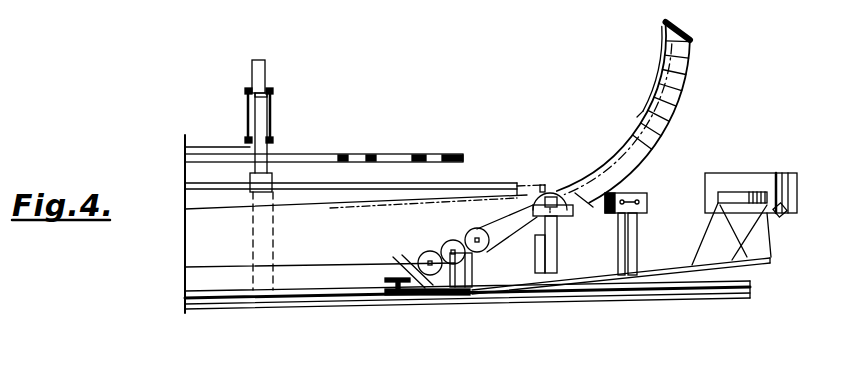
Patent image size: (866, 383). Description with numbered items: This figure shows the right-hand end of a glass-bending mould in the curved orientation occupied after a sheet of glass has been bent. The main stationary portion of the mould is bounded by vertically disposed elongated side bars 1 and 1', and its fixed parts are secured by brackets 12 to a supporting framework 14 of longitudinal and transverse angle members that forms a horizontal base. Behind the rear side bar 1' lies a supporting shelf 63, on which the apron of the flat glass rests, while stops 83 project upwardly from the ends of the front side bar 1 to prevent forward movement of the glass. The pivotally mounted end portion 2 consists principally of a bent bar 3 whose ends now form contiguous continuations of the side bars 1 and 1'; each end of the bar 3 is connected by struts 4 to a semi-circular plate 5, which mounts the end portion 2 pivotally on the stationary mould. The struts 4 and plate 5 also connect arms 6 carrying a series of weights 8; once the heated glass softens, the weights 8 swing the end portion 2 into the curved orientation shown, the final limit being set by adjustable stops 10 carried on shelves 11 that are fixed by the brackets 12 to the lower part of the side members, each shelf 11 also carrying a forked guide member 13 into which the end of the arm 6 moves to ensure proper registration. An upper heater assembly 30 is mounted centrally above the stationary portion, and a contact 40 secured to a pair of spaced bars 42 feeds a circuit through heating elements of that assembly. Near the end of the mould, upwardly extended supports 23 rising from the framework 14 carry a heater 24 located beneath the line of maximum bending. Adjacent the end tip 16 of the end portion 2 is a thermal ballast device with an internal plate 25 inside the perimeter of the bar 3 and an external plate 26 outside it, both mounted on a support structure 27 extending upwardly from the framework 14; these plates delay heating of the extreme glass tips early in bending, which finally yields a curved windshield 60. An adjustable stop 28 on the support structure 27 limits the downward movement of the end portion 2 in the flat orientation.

The side bar 1 is at (320, 234).
The side bar 1' is at (356, 180).
The end portion 2 is at (686, 108).
The bent bar 3 is at (650, 155).
The struts 4 is at (572, 217).
The semi-circular plate 5 is at (550, 195).
The arms 6 is at (518, 228).
The weights 8 is at (456, 240).
The adjustable stops 10 is at (385, 280).
The shelves 11 is at (432, 299).
The brackets 12 is at (473, 275).
The forked guide member 13 is at (395, 255).
The supporting framework 14 is at (593, 302).
The end tip 16 is at (686, 32).
The upwardly extended supports 23 is at (636, 249).
The heater 24 is at (647, 204).
The internal plate 25 is at (752, 191).
The external plate 26 is at (793, 173).
The support structure 27 is at (773, 262).
The adjustable stop 28 is at (790, 210).
The upper heater assembly 30 is at (375, 150).
The contact 40 is at (265, 72).
The spaced bars 42 is at (270, 118).
The windshield 60 is at (638, 118).
The supporting shelf 63 is at (460, 182).
The stops 83 is at (541, 185).